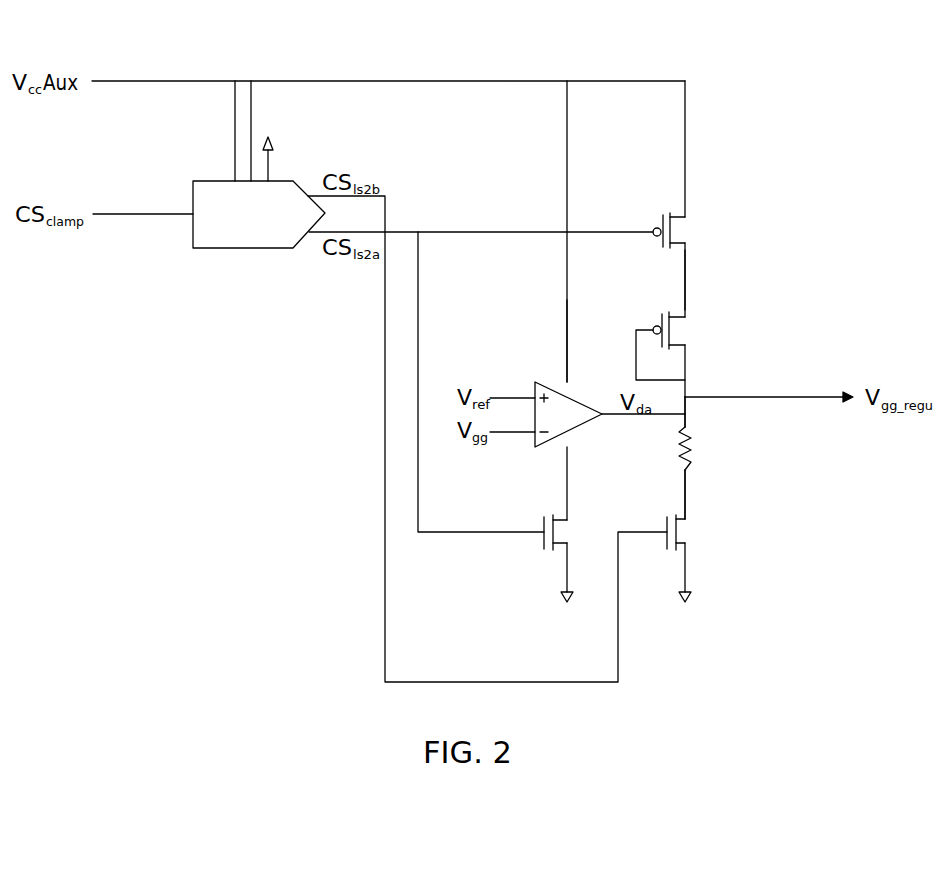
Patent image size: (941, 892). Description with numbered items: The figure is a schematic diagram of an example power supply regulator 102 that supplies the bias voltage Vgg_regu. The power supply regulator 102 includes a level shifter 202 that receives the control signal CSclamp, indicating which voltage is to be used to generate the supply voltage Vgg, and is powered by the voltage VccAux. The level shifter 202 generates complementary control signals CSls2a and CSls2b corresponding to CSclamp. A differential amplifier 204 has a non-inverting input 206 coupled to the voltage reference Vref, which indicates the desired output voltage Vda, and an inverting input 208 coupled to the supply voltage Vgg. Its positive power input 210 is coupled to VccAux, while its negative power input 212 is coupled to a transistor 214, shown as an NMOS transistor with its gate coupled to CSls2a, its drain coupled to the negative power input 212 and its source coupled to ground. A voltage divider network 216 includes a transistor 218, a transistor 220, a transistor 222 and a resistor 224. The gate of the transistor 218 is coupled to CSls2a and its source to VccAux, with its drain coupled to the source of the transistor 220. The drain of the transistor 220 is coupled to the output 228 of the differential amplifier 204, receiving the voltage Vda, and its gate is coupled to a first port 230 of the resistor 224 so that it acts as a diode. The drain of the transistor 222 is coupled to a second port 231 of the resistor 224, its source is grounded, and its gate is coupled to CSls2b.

The power supply regulator 102 is at (478, 24).
The level shifter 202 is at (259, 192).
The differential amplifier 204 is at (557, 391).
The non-inverting input 206 is at (530, 394).
The inverting input 208 is at (535, 435).
The positive power input 210 is at (575, 403).
The negative power input 212 is at (567, 435).
The transistor 214 is at (542, 540).
The voltage divider network 216 is at (764, 260).
The transistor 218 is at (656, 227).
The transistor 220 is at (658, 322).
The transistor 222 is at (663, 525).
The resistor 224 is at (690, 447).
The output 228 is at (604, 417).
The first port 230 is at (688, 428).
The second port 231 is at (688, 471).